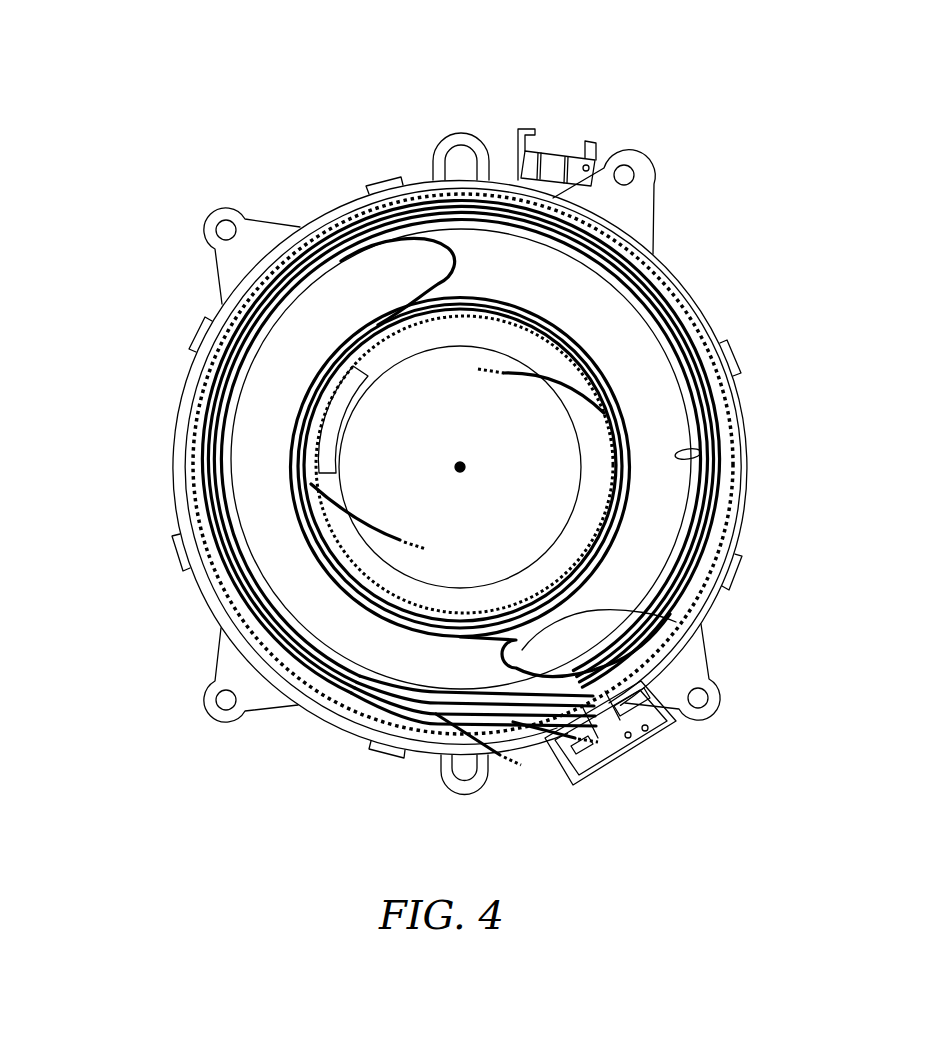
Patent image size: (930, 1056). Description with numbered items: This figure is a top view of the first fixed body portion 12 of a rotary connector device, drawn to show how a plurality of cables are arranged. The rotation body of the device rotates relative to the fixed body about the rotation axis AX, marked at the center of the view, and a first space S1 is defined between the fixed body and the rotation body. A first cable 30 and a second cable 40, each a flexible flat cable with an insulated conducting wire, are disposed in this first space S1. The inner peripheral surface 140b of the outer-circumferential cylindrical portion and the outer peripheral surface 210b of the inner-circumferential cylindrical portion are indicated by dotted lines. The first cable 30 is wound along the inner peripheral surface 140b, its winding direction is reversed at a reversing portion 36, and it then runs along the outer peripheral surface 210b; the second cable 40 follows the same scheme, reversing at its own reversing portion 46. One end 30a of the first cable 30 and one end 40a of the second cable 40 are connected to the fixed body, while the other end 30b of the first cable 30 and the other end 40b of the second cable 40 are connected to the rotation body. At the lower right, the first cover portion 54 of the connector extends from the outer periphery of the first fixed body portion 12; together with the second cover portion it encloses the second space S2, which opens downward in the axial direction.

The first fixed body portion 12 is at (745, 80).
The first cable 30 is at (205, 471).
The second cable 40 is at (197, 405).
The one end of the first cable 30a is at (497, 752).
The other end of the first cable 30b is at (474, 364).
The one end of the second cable 40a is at (580, 747).
The other end of the second cable 40b is at (405, 530).
The reversing portion 36 is at (645, 610).
The reversing portion 46 is at (440, 272).
The first cover portion 54 is at (600, 731).
The inner peripheral surface 140b is at (693, 442).
The outer peripheral surface 210b is at (390, 582).
The first space S1 is at (654, 364).
The second space S2 is at (668, 727).
The rotation axis AX is at (458, 457).